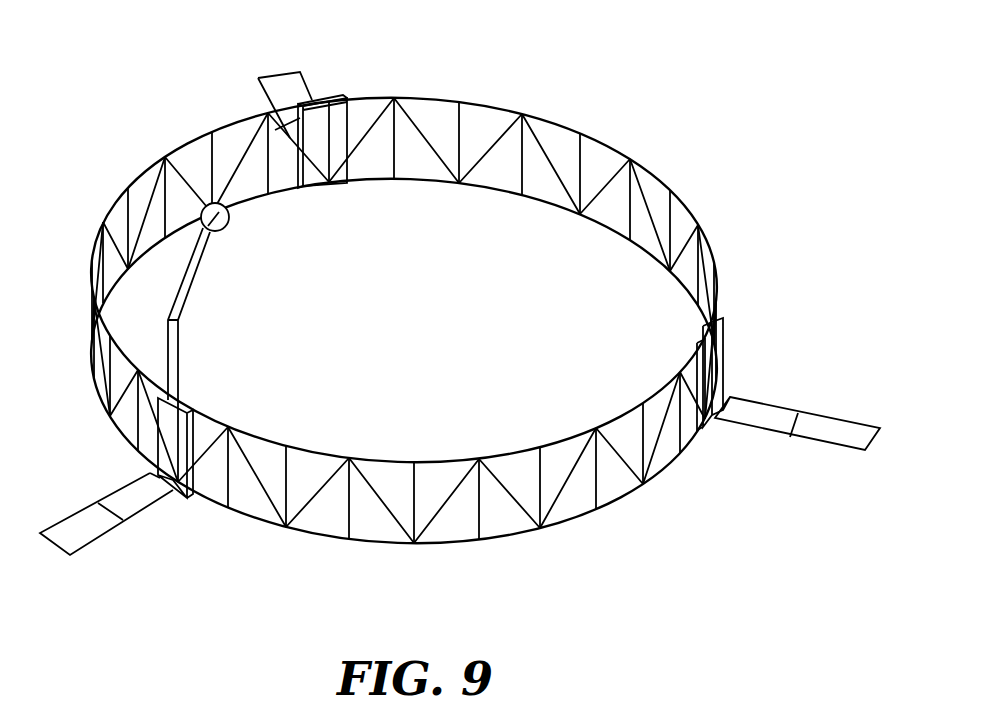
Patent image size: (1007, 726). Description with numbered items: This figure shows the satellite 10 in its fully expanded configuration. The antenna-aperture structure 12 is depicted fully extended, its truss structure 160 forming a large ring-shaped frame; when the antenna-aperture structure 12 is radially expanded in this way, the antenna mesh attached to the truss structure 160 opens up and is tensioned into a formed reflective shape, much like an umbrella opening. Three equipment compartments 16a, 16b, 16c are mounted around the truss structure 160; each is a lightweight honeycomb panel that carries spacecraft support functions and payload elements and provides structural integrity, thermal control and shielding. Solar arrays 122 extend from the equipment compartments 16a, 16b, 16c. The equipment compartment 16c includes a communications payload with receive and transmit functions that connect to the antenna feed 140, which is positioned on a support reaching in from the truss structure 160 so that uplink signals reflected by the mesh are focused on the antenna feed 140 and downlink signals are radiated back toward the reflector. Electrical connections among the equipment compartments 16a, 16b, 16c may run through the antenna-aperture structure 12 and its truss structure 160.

The deployable reflector assembly 10 is at (153, 64).
The antenna-aperture structure 12 is at (690, 190).
The truss structure 160 is at (603, 132).
The antenna feed 140 is at (188, 283).
The equipment compartment 16a is at (712, 352).
The equipment compartment 16b is at (330, 157).
The equipment compartment 16c is at (168, 438).
The solar arrays 122 is at (278, 88).